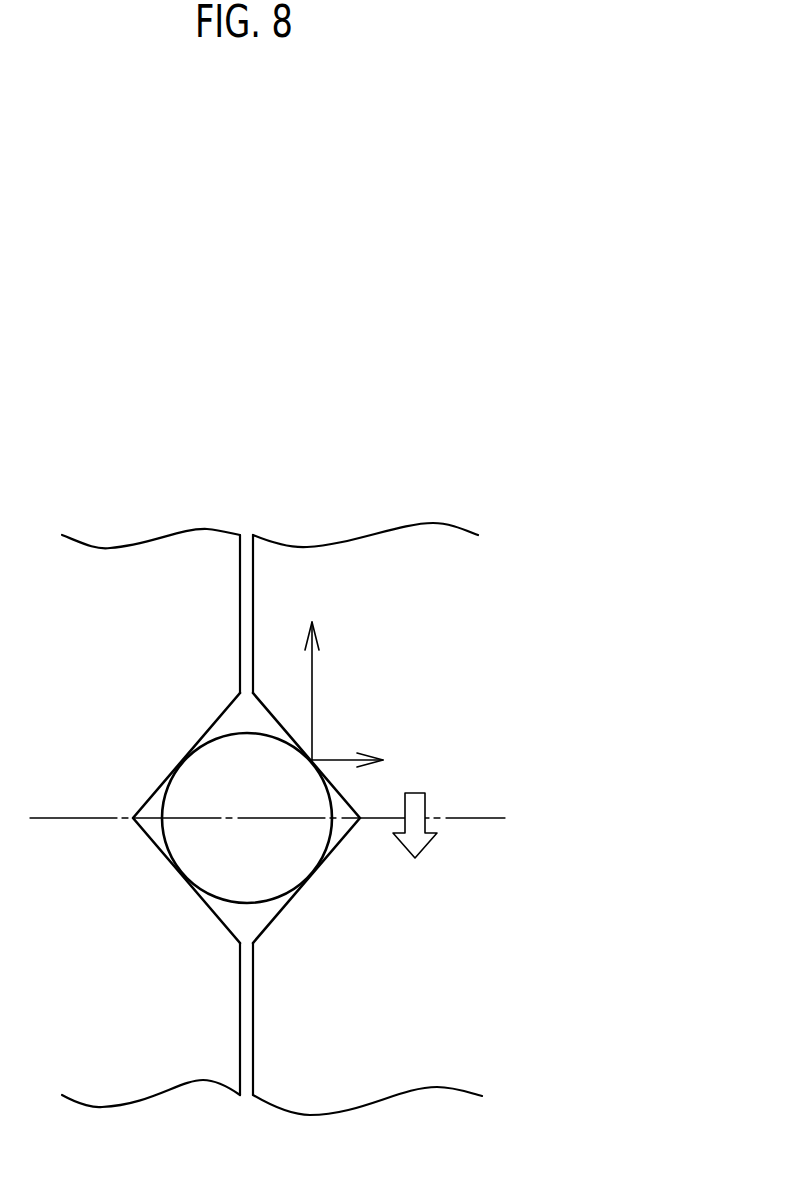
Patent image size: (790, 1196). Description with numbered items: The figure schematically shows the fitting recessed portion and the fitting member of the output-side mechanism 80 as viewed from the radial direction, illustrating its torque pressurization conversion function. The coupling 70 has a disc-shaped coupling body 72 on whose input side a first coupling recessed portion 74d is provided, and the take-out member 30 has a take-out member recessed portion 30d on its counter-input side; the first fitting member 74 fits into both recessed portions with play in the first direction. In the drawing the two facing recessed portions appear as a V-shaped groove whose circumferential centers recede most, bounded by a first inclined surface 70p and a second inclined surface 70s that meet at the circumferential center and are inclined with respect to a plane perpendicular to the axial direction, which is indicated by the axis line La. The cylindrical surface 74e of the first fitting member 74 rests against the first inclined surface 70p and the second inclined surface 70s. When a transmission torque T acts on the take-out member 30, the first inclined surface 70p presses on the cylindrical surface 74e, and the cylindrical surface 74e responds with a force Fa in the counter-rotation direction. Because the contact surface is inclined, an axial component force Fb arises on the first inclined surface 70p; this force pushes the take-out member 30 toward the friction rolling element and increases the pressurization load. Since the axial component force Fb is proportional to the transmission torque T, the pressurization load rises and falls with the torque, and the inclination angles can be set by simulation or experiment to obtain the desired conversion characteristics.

The output-side mechanism 80 is at (450, 413).
The coupling 70 is at (250, 488).
The coupling body 72 is at (197, 557).
The take-out member 30 is at (338, 558).
The first fitting member 74 is at (177, 837).
The first inclined surface 70p is at (266, 702).
The second inclined surface 70s is at (193, 747).
The first coupling recessed portion 74d is at (122, 790).
The cylindrical surface 74e is at (283, 895).
The take-out member recessed portion 30d is at (337, 863).
The axis line La is at (472, 818).
The transmission torque T is at (422, 818).
The force in counter-rotation direction Fa is at (311, 673).
The axial component force Fb is at (364, 759).